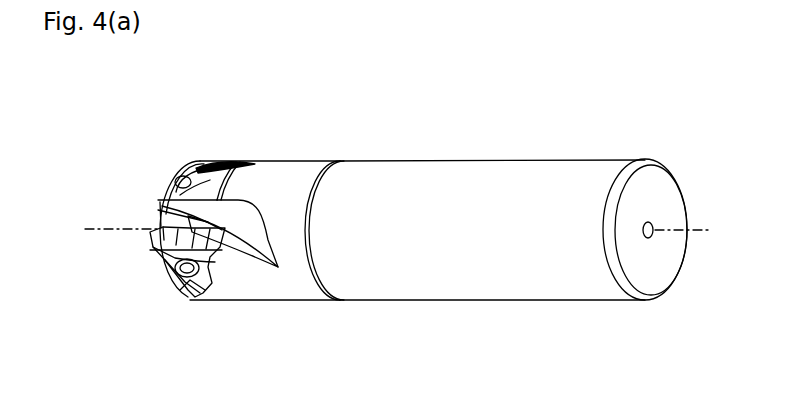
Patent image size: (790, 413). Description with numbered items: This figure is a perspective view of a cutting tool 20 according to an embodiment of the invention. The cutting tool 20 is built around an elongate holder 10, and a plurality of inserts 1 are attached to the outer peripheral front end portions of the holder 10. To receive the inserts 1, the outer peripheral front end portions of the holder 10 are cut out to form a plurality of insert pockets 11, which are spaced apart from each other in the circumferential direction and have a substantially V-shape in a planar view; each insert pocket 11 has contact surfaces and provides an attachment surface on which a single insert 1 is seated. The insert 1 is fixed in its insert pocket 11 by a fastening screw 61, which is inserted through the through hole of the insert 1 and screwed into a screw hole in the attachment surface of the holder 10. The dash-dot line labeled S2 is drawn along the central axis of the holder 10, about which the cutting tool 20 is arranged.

The cutting tool 20 is at (422, 168).
The holder 10 is at (513, 186).
The insert 1 is at (216, 152).
The insert pocket 11 is at (233, 222).
The fastening screw 61 is at (177, 272).
The tool rotation axis S2 is at (110, 226).